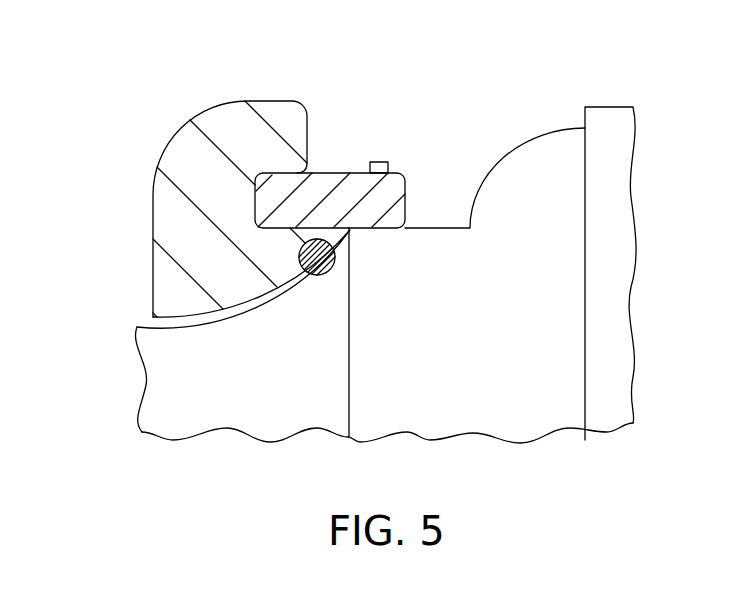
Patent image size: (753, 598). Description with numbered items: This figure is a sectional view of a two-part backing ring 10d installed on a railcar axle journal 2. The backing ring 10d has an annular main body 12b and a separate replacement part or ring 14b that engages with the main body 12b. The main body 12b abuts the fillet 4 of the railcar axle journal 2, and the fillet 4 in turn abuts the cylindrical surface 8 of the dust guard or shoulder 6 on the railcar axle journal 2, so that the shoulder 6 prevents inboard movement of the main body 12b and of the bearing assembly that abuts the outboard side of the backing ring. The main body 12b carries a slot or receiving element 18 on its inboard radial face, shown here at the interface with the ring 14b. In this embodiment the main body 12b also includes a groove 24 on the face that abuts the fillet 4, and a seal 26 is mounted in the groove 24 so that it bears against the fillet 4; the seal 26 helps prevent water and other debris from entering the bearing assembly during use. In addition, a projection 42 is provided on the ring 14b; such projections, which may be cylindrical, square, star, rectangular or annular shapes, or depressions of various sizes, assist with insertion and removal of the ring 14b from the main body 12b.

The two-part backing ring 10d is at (100, 68).
The main body 12b is at (195, 148).
The ring 14b is at (317, 187).
The projections 42 is at (378, 162).
The cylindrical surface 8 is at (447, 228).
The dust guard or shoulder 6 is at (558, 327).
The slot or receiving element 18 is at (258, 226).
The seal 26 is at (335, 257).
The groove 24 is at (318, 267).
The railcar axle journal 2 is at (171, 387).
The fillet 4 is at (247, 318).